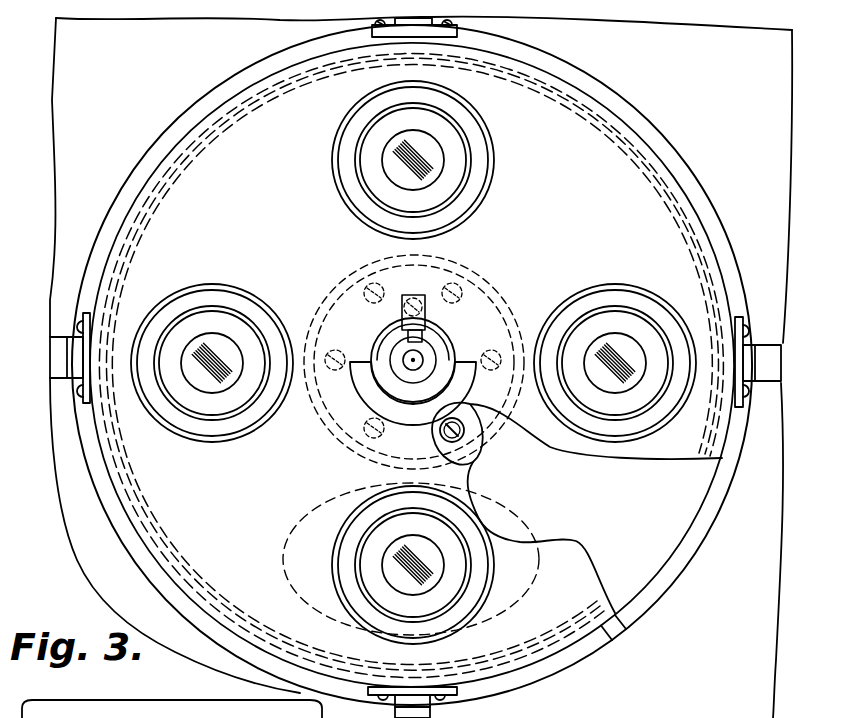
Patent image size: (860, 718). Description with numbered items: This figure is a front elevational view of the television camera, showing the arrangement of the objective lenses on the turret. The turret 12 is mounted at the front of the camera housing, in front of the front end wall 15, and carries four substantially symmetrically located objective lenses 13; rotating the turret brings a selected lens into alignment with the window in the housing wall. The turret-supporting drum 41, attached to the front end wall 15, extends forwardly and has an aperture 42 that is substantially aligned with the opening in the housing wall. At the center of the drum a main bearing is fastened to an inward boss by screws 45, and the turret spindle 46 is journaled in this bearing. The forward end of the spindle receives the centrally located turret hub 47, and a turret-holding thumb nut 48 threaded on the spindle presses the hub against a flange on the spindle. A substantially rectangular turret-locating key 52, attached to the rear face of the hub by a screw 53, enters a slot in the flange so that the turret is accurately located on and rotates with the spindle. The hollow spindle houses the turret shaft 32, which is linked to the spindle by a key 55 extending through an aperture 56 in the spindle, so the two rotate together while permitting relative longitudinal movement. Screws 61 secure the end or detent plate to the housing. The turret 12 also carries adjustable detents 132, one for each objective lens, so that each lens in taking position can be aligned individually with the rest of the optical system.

The turret 12 is at (610, 627).
The objective lenses 13 is at (466, 192).
The front end wall 15 is at (773, 661).
The turret shaft 32 is at (426, 358).
The turret-supporting drum 41 is at (690, 567).
The aperture 42 is at (530, 524).
The screws 45 is at (465, 437).
The turret spindle 46 is at (382, 355).
The turret hub 47 is at (380, 350).
The turret-holding thumb nut 48 is at (407, 422).
The turret-locating key 52 is at (396, 297).
The screw 53 is at (430, 308).
The key 55 is at (380, 336).
The aperture 56 is at (427, 344).
The screws 61 is at (66, 717).
The adjustable detents 132 is at (358, 31).